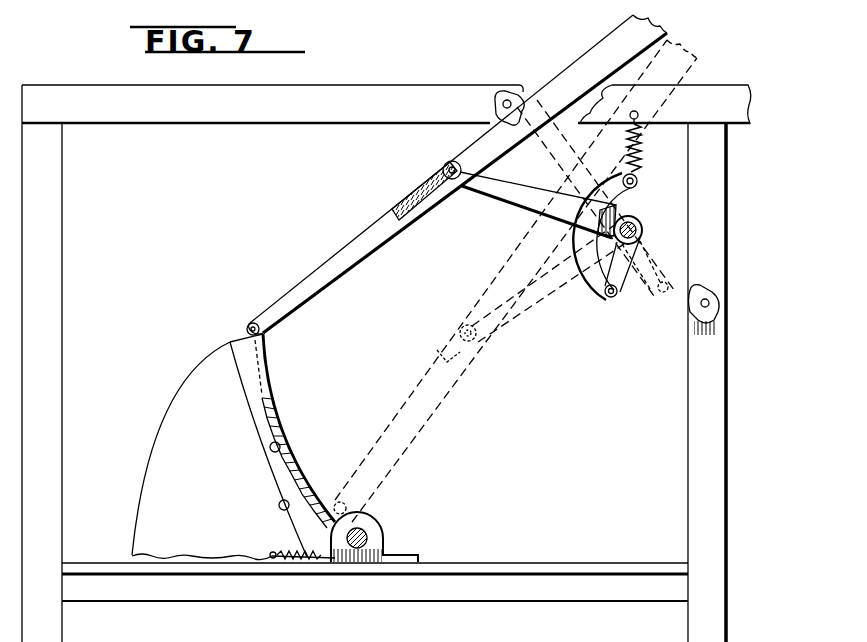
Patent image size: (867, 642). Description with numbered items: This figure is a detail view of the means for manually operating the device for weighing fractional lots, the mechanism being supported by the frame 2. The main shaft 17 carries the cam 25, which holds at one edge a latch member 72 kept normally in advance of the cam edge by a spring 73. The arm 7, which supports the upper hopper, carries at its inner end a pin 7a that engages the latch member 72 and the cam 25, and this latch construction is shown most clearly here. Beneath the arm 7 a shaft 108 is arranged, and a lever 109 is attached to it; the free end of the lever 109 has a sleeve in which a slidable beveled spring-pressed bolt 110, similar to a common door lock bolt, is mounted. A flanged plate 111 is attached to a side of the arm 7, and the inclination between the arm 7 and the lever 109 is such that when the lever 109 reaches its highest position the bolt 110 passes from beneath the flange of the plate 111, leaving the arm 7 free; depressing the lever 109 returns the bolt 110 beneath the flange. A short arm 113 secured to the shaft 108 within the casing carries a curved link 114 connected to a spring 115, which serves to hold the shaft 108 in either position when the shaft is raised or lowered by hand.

The frame 2 is at (395, 102).
The arm 7 is at (325, 262).
The pin 7a is at (250, 322).
The main shaft 17 is at (366, 535).
The cam 25 is at (233, 451).
The latch member 72 is at (262, 388).
The spring 73 is at (278, 552).
The shaft 108 is at (637, 222).
The lever 109 is at (521, 202).
The bolt 110 is at (447, 164).
The flanged plate 111 is at (417, 190).
The short arm 113 is at (660, 296).
The curved link 114 is at (604, 294).
The spring 115 is at (667, 134).